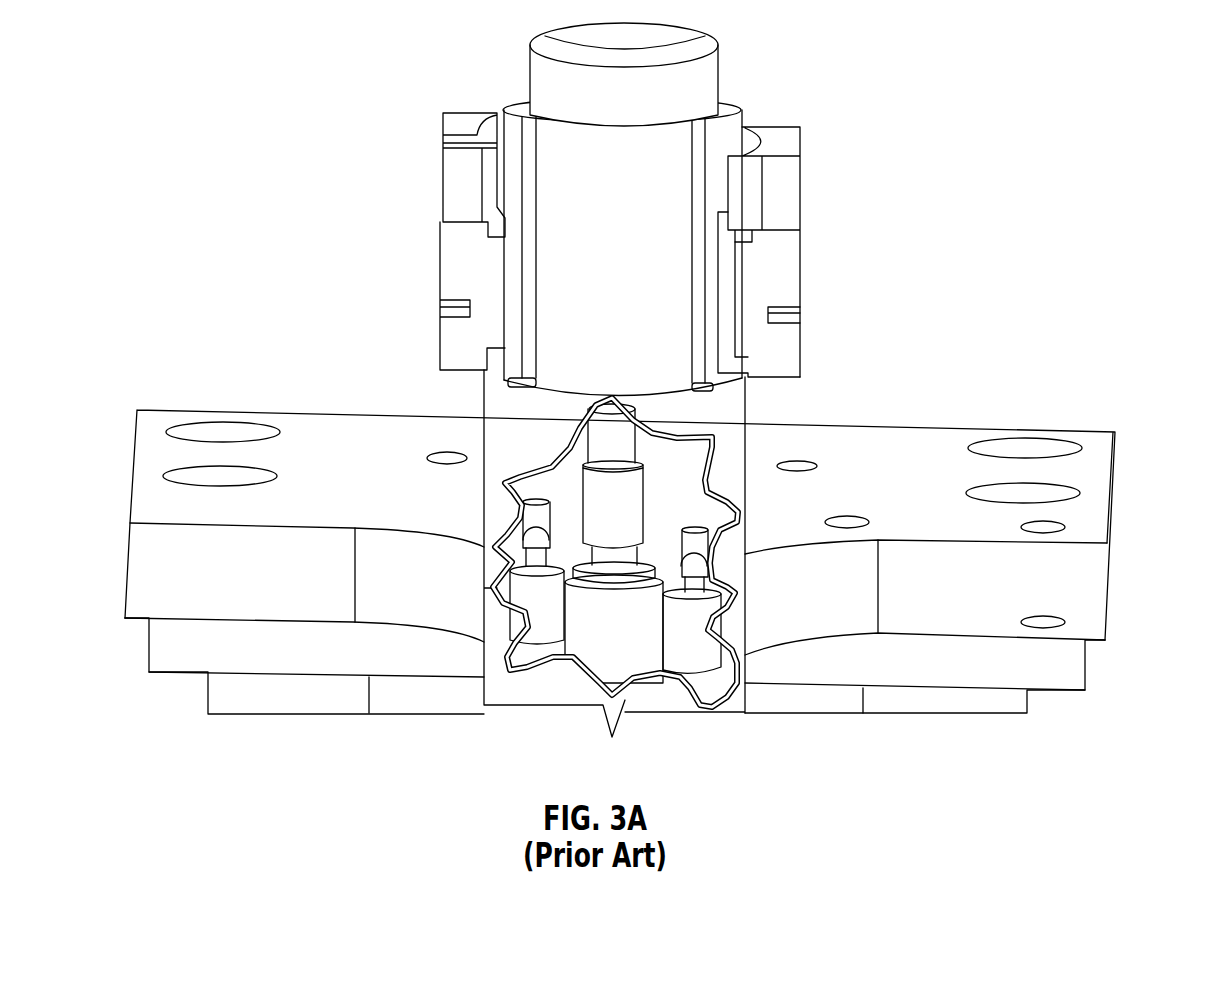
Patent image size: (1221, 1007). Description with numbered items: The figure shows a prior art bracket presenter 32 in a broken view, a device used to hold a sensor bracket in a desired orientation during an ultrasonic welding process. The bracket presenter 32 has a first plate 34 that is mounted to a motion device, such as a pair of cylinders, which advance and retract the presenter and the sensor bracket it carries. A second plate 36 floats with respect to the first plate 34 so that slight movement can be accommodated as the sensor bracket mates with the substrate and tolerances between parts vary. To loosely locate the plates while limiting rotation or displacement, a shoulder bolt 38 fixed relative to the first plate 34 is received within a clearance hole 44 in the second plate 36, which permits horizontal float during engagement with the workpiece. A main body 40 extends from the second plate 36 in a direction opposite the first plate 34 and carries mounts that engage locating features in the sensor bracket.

The bracket presenter 32 is at (670, 401).
The first plate 34 is at (1068, 663).
The second plate 36 is at (898, 462).
The shoulder bolt 38 is at (627, 490).
The main body 40 is at (700, 78).
The clearance hole 44 is at (593, 455).